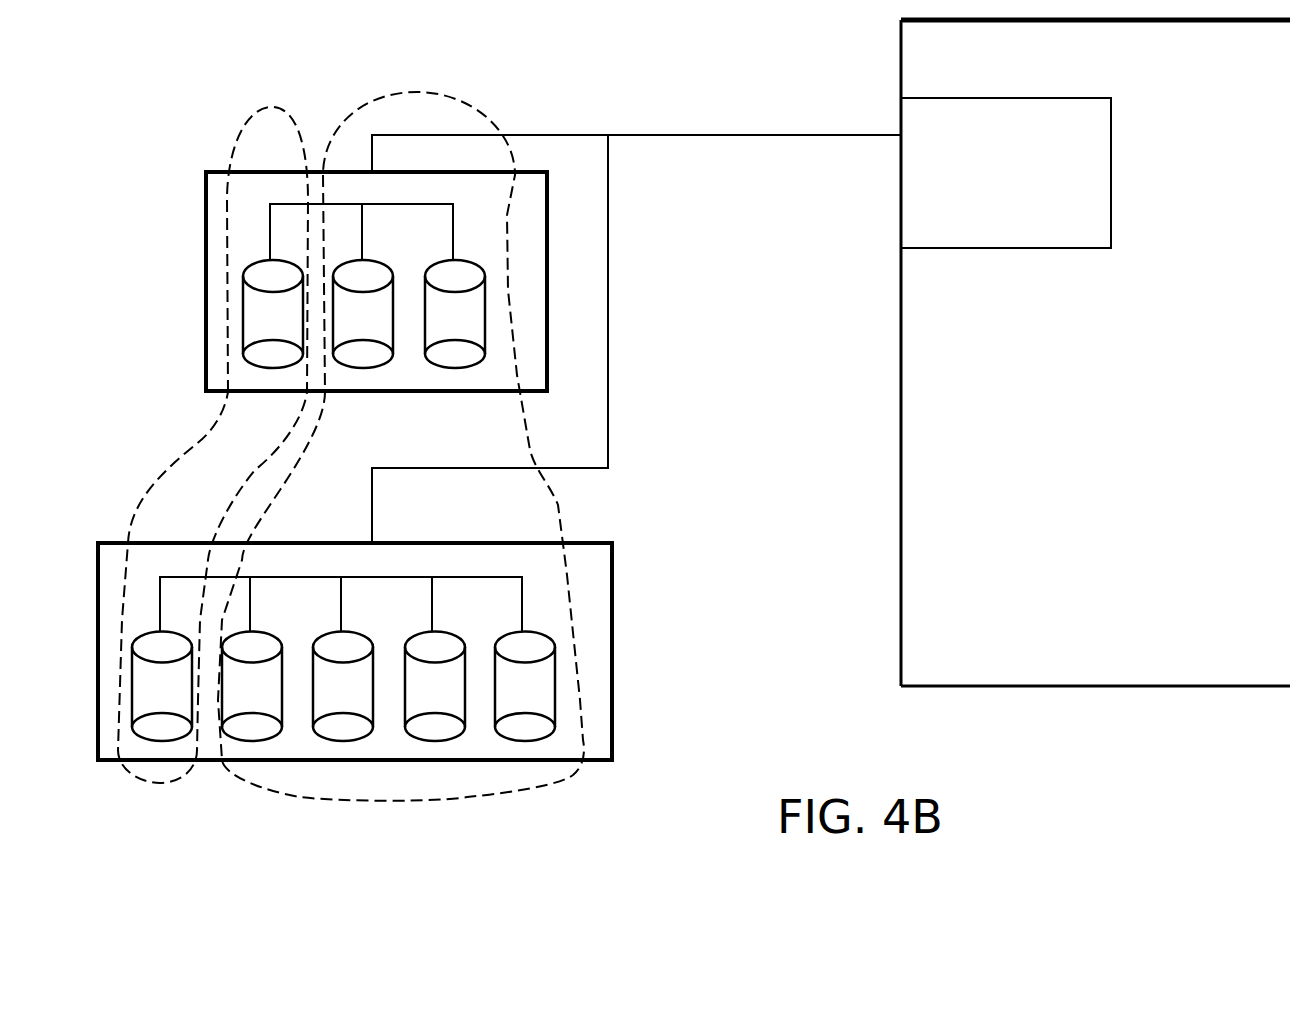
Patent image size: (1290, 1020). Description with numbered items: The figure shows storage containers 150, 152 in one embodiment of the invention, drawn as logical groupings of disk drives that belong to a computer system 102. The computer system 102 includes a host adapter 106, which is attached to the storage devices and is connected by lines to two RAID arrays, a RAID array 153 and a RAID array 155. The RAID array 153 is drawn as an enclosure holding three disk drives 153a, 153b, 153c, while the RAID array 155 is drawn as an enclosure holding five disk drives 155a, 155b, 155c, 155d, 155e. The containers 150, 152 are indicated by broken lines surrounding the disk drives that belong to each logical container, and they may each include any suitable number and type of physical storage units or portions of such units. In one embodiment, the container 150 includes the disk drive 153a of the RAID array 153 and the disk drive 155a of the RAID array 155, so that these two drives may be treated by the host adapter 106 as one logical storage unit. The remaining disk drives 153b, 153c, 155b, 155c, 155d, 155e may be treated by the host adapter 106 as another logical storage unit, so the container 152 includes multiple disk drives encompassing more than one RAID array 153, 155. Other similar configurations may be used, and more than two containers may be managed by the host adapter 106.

The computer system 102 is at (1070, 686).
The host adapter 106 is at (901, 120).
The storage container 150 is at (463, 102).
The storage container 152 is at (240, 132).
The RAID array 153 is at (370, 312).
The disk drive 153a is at (242, 328).
The disk drive 153b is at (370, 365).
The disk drive 153c is at (488, 310).
The RAID array 155 is at (420, 692).
The disk drive 155a is at (152, 740).
The disk drive 155b is at (245, 740).
The disk drive 155c is at (353, 740).
The disk drive 155d is at (433, 740).
The disk drive 155e is at (557, 703).